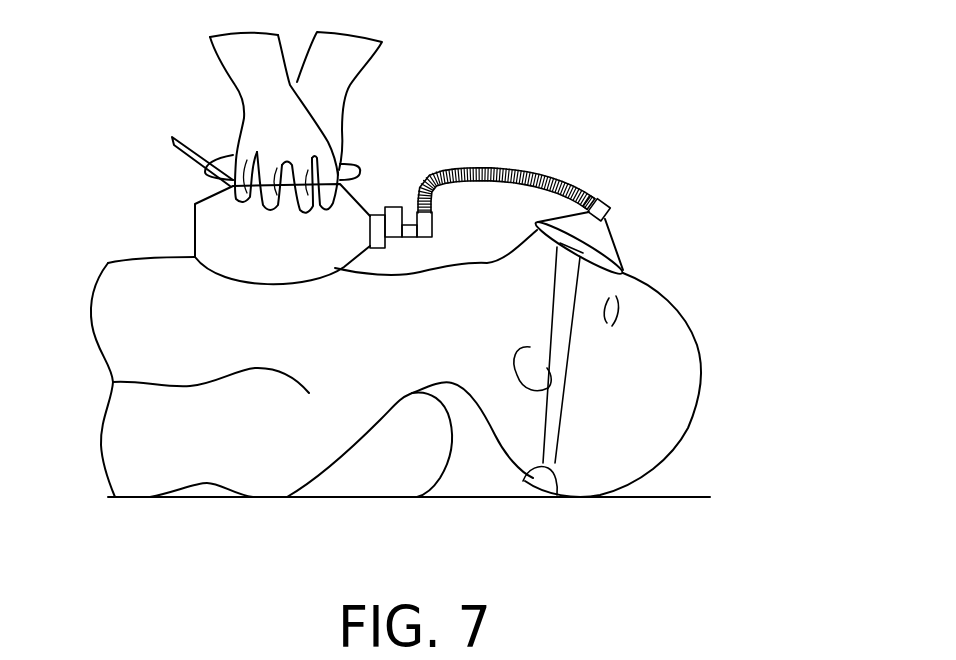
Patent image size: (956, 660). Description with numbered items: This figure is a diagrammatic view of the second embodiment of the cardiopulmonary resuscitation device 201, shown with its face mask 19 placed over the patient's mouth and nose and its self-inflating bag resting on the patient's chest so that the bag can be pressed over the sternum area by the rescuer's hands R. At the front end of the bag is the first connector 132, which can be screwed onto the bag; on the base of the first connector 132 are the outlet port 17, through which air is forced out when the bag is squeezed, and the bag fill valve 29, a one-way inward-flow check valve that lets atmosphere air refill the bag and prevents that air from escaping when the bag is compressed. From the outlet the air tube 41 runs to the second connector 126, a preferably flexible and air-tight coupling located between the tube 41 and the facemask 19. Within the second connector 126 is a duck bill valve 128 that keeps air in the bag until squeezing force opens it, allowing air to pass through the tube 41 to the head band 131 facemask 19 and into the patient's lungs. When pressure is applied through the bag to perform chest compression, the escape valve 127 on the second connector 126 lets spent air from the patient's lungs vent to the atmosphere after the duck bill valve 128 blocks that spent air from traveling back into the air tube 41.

The cardiopulmonary resuscitation device 201 is at (556, 112).
The rescuer's hand R is at (207, 69).
The outlet port 17 is at (384, 222).
The bag fill valve 29 is at (408, 224).
The air tube 41 is at (457, 173).
The duck bill valve 128 is at (588, 207).
The second connector 126 is at (632, 181).
The escape valve 127 is at (612, 212).
The face mask 19 is at (603, 243).
The head band 131 is at (552, 405).
The first connector 132 is at (378, 222).